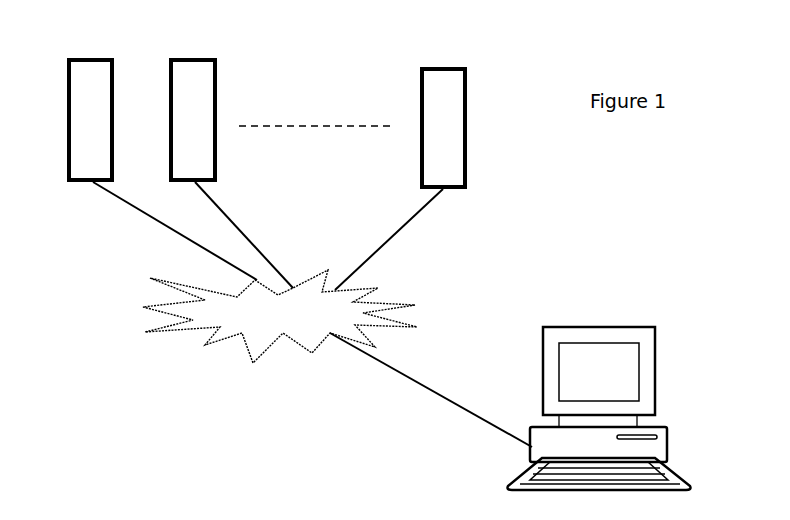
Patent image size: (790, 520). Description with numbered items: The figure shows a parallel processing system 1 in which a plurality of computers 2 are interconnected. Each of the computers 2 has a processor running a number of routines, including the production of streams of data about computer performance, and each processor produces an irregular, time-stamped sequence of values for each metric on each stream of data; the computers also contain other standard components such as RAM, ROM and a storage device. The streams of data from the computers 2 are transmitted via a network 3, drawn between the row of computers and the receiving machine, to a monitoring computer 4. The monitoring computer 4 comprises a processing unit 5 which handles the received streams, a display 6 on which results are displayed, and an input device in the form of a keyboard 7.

The parallel processing system 1 is at (499, 132).
The computers 2 is at (267, 175).
The network 3 is at (337, 358).
The monitoring computer 4 is at (585, 297).
The processing unit 5 is at (532, 450).
The display 6 is at (568, 372).
The keyboard 7 is at (517, 478).